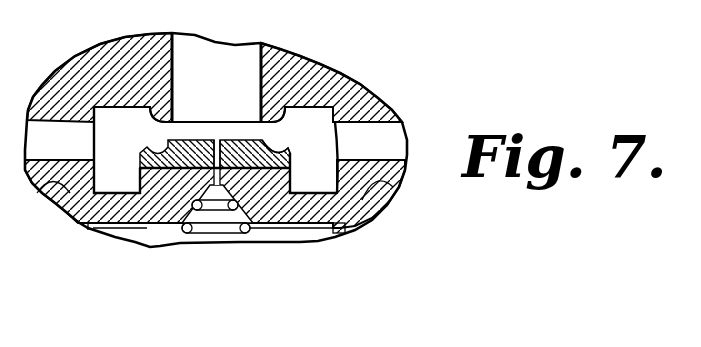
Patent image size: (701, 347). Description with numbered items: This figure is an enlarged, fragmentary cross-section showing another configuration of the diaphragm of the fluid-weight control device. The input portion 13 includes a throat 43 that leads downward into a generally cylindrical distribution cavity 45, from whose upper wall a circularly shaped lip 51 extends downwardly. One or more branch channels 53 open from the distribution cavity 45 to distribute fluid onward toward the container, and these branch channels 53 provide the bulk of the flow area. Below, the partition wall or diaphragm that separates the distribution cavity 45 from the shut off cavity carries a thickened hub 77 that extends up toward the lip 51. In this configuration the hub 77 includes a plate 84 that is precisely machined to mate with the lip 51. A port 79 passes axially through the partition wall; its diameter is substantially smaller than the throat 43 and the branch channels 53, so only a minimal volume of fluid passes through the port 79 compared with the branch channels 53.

The input portion 13 is at (127, 84).
The throat 43 is at (222, 70).
The lip 51 is at (167, 115).
The port 79 is at (228, 140).
The plate 84 is at (261, 155).
The distribution cavity 45 is at (125, 161).
The branch channel 53 is at (69, 156).
The thickened hub 77 is at (153, 245).